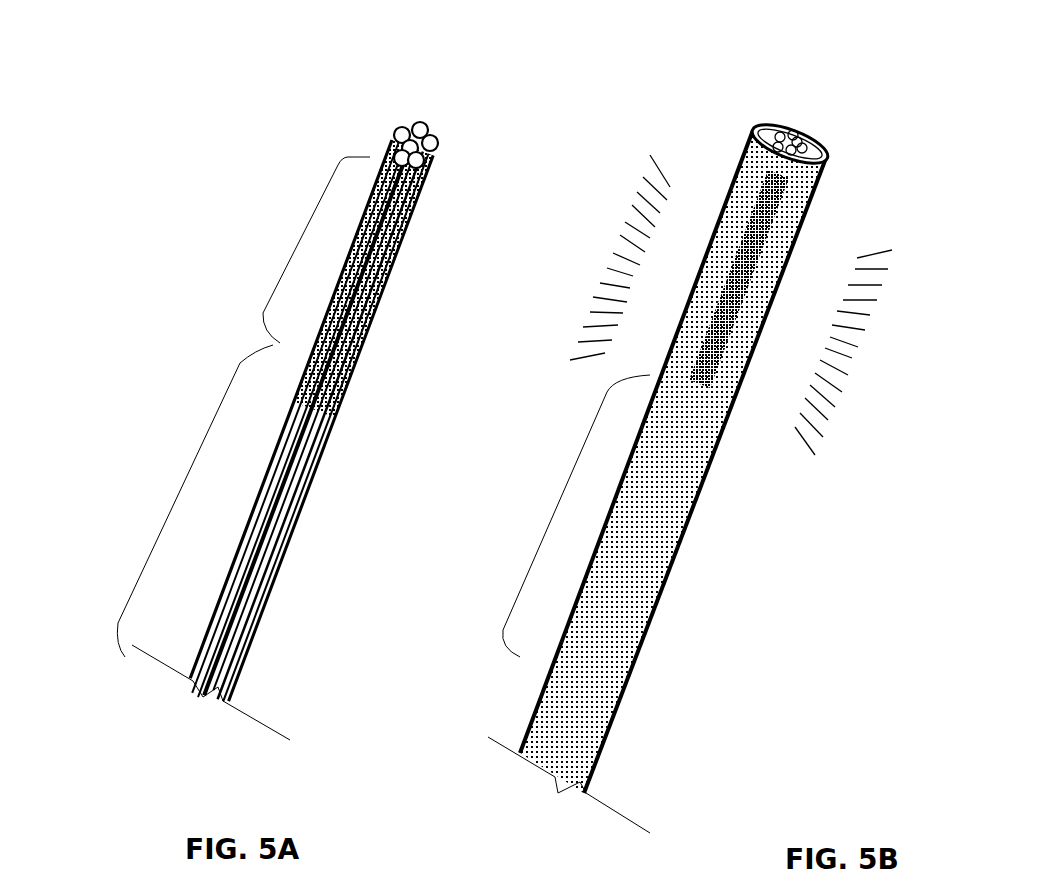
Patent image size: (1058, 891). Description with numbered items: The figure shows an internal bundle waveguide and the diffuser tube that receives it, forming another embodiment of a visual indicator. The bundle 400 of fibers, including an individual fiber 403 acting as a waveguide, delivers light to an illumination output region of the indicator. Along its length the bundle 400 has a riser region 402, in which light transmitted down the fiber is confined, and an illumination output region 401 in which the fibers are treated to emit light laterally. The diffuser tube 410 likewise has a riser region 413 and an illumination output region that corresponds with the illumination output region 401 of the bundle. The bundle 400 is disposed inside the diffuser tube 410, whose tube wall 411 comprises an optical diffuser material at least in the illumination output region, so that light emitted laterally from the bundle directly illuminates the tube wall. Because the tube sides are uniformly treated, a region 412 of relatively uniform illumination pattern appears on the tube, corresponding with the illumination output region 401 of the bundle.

In FIG. 5A, the bundle of fibers 400 is at (298, 104).
In FIG. 5B, the bundle of fibers 400 is at (797, 127).
In FIG. 5A, the illumination output region 401 is at (300, 237).
In FIG. 5A, the riser region 402 is at (178, 494).
In FIG. 5A, the fiber 403 is at (362, 300).
In FIG. 5B, the diffuser tube 410 is at (692, 503).
In FIG. 5B, the tube wall 411 is at (828, 148).
In FIG. 5B, the region with relatively uniform illumination pattern 412 is at (767, 249).
In FIG. 5B, the riser region 413 is at (558, 503).